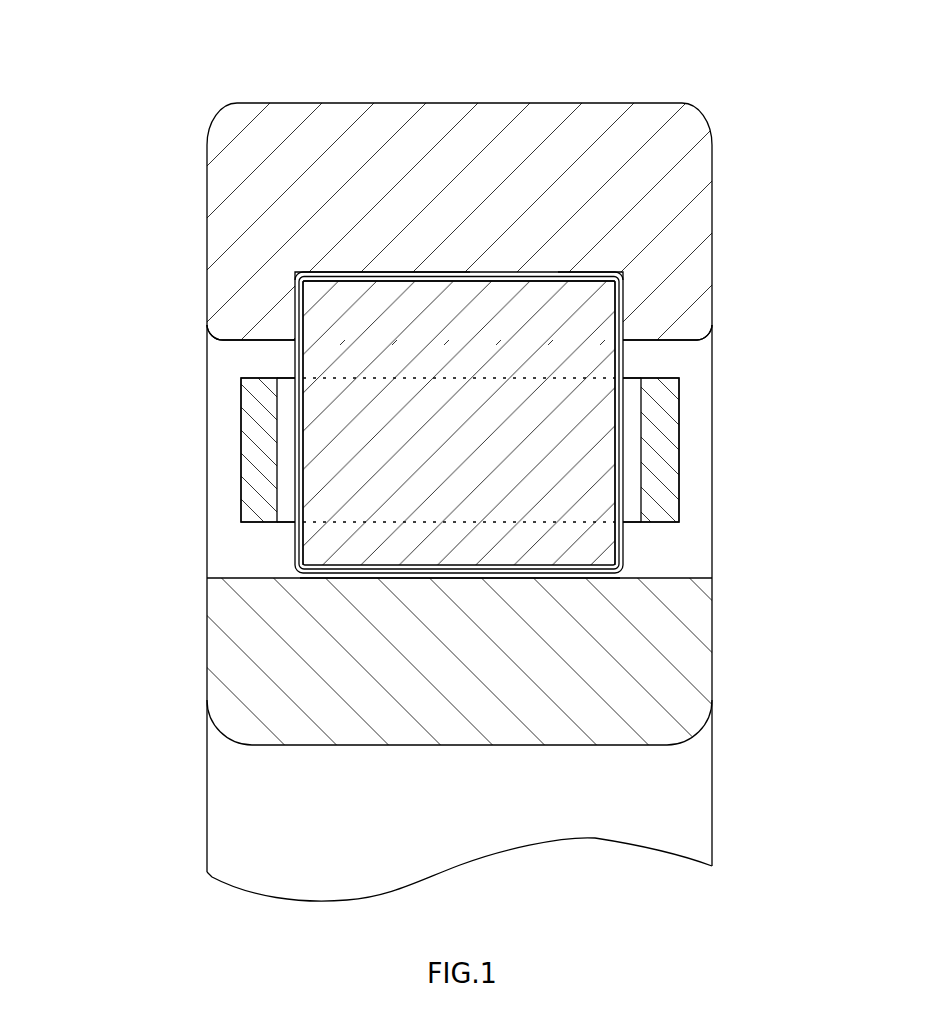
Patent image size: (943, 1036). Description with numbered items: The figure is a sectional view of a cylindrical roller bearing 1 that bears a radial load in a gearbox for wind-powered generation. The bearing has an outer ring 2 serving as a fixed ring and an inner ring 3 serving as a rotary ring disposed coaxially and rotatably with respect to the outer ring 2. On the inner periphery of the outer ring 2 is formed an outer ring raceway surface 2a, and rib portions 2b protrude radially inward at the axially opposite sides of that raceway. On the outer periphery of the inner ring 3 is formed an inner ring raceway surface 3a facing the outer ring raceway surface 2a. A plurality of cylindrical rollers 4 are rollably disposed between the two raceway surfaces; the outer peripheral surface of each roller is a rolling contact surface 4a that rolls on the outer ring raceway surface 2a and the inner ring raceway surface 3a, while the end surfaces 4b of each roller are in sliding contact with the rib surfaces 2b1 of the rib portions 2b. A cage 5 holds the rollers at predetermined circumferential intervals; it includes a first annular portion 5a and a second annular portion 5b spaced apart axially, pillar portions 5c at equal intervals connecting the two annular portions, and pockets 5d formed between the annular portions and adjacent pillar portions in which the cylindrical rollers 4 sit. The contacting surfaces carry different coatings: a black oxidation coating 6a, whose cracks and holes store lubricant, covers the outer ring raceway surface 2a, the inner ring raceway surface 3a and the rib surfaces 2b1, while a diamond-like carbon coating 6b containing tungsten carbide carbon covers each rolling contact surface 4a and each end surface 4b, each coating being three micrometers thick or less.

The cylindrical roller bearing 1 is at (180, 71).
The outer ring 2 is at (713, 205).
The outer ring raceway surface 2a is at (412, 277).
The rib portion 2b is at (252, 343).
The rib surface 2b1 is at (352, 272).
The inner ring 3 is at (713, 637).
The inner ring raceway surface 3a is at (523, 578).
The cylindrical roller 4 is at (294, 358).
The rolling contact surface 4a is at (509, 283).
The end surface 4b is at (296, 440).
The cage 5 is at (239, 481).
The first annular portion 5a is at (248, 428).
The second annular portion 5b is at (672, 439).
The pillar portion 5c is at (640, 372).
The pocket 5d is at (633, 510).
The black oxidation coating 6a is at (470, 272).
The diamond-like carbon coating 6b is at (450, 283).